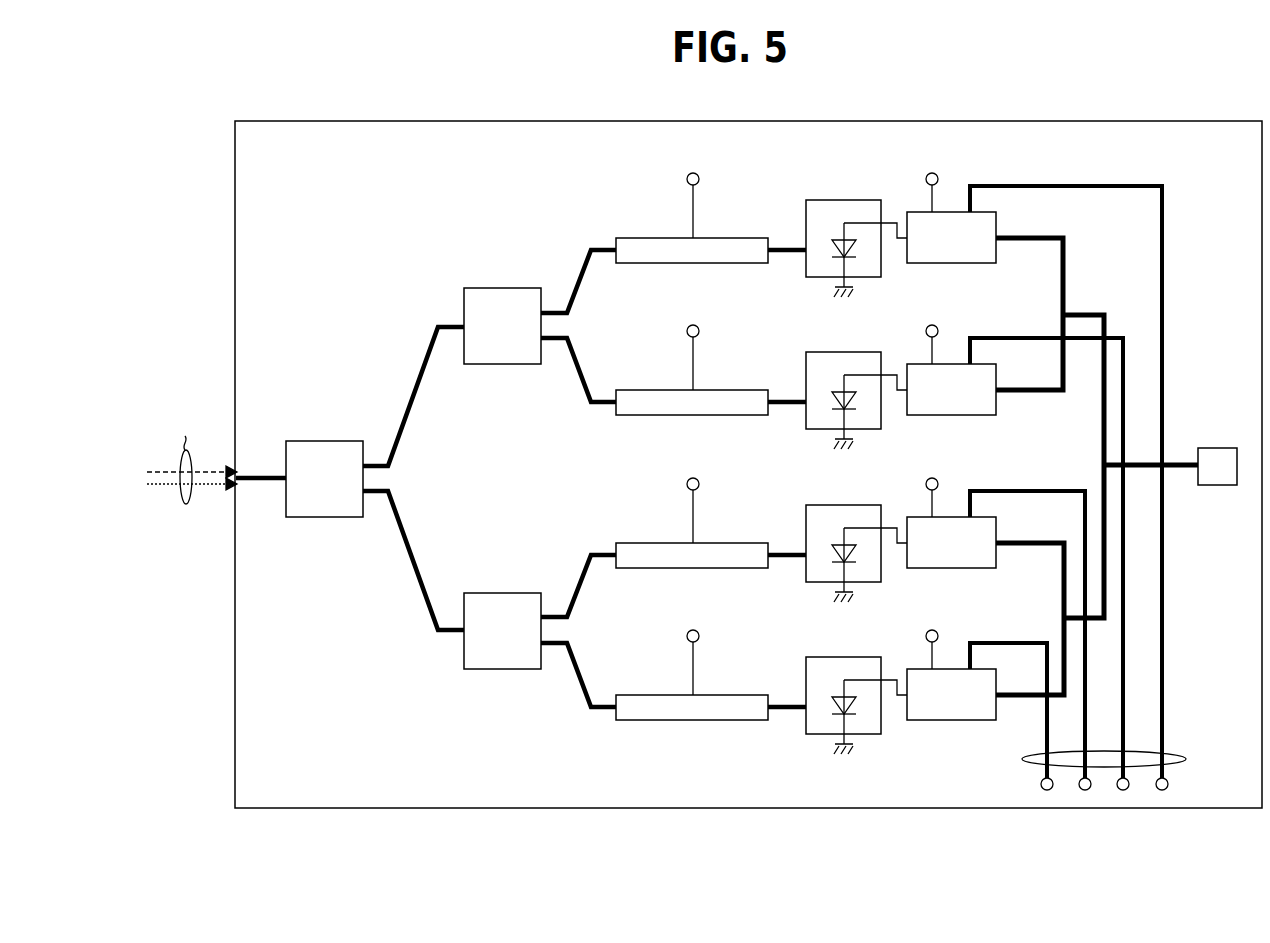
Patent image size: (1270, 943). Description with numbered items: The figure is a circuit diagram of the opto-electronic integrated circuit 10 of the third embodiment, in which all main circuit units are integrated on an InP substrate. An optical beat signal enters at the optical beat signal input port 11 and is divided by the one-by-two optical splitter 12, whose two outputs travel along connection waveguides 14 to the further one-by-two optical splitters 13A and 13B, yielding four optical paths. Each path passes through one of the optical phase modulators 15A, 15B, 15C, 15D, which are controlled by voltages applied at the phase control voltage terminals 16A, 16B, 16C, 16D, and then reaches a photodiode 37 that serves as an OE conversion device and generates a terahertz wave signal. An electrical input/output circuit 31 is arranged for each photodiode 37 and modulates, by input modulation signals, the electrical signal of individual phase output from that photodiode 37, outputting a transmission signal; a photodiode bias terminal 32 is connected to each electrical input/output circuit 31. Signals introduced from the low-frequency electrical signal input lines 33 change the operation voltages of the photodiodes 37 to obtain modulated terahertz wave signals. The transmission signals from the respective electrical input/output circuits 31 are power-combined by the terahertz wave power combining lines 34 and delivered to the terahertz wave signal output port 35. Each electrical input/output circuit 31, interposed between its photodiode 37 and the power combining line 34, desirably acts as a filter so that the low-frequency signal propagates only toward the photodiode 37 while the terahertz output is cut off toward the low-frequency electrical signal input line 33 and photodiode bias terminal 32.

The opto-electronic integrated circuit 10 is at (288, 121).
The optical beat signal input port 11 is at (238, 483).
The 1×2 optical splitter 12 is at (388, 427).
The 1×2 optical splitter 13A is at (567, 278).
The 1×2 optical splitter 13B is at (567, 584).
The connection waveguide 14 is at (440, 316).
The optical phase modulator 15A is at (640, 238).
The optical phase modulator 15B is at (640, 390).
The optical phase modulator 15C is at (640, 543).
The optical phase modulator 15D is at (640, 695).
The phase control voltage terminal 16A is at (700, 180).
The phase control voltage terminal 16B is at (700, 332).
The phase control voltage terminal 16C is at (700, 485).
The phase control voltage terminal 16D is at (700, 637).
The electrical input/output circuit 31 is at (945, 264).
The photodiode bias terminal 32 is at (925, 180).
The low-frequency electrical signal input line 33 is at (1186, 760).
The terahertz wave power combining line 34 is at (1110, 238).
The terahertz wave signal output port 35 is at (1218, 448).
The photodiode 37 is at (830, 200).